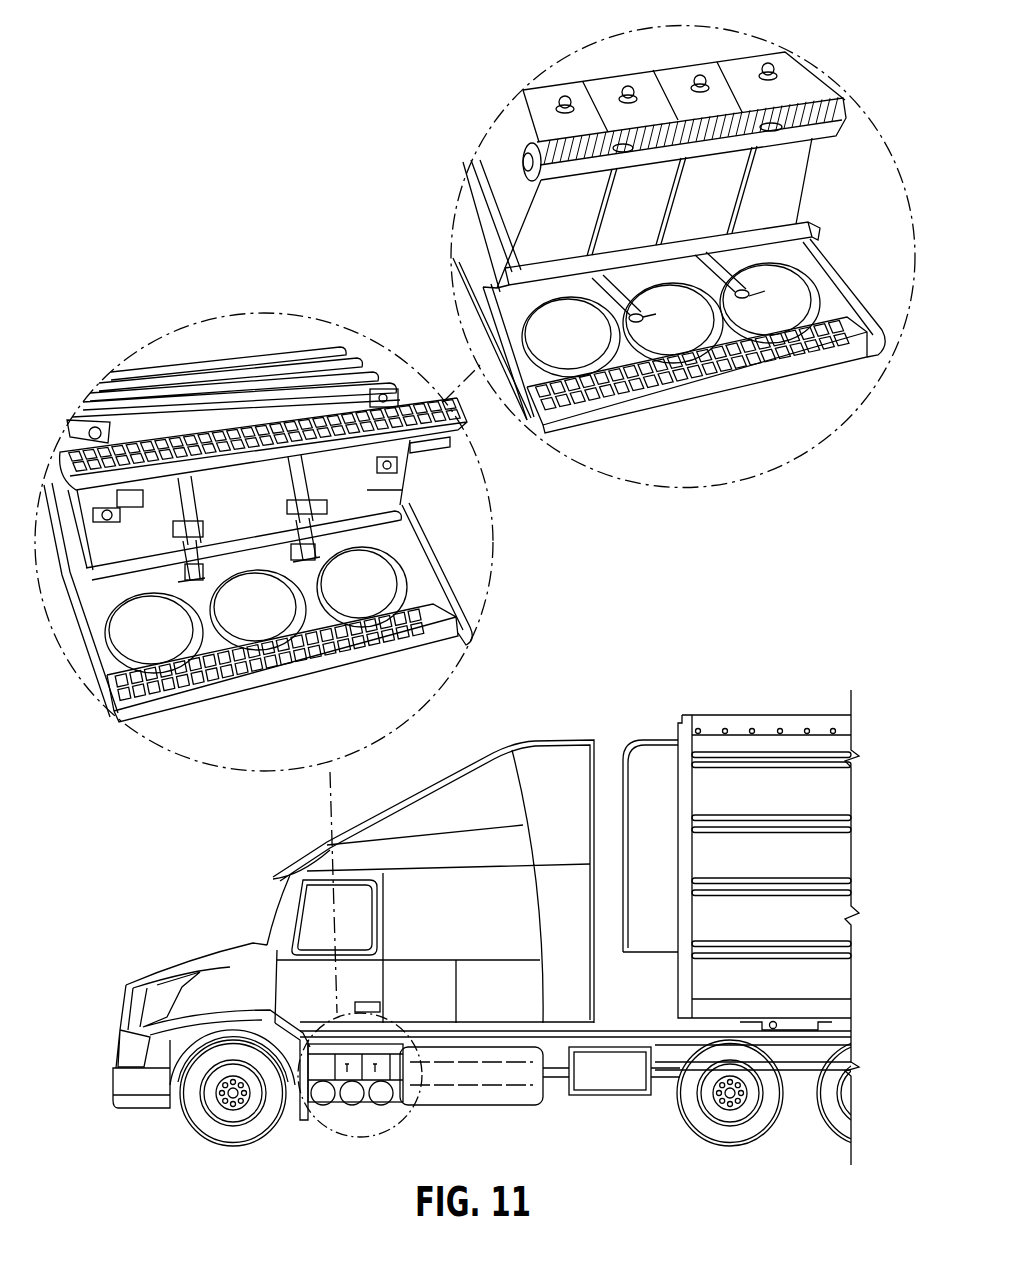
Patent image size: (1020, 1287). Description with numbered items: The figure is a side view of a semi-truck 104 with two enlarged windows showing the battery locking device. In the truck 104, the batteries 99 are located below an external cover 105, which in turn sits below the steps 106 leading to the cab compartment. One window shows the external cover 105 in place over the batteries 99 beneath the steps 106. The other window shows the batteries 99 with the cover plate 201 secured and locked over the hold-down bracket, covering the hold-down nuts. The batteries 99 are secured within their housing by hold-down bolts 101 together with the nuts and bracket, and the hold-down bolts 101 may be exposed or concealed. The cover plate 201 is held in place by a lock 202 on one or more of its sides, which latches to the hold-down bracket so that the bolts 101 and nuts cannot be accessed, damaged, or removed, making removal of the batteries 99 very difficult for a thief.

The battery 99 is at (577, 224).
The hold-down bolt 101 is at (630, 150).
The semi-truck 104 is at (567, 965).
The external cover 105 is at (367, 493).
The steps 106 is at (707, 372).
The cover plate 201 is at (823, 126).
The lock 202 is at (524, 166).